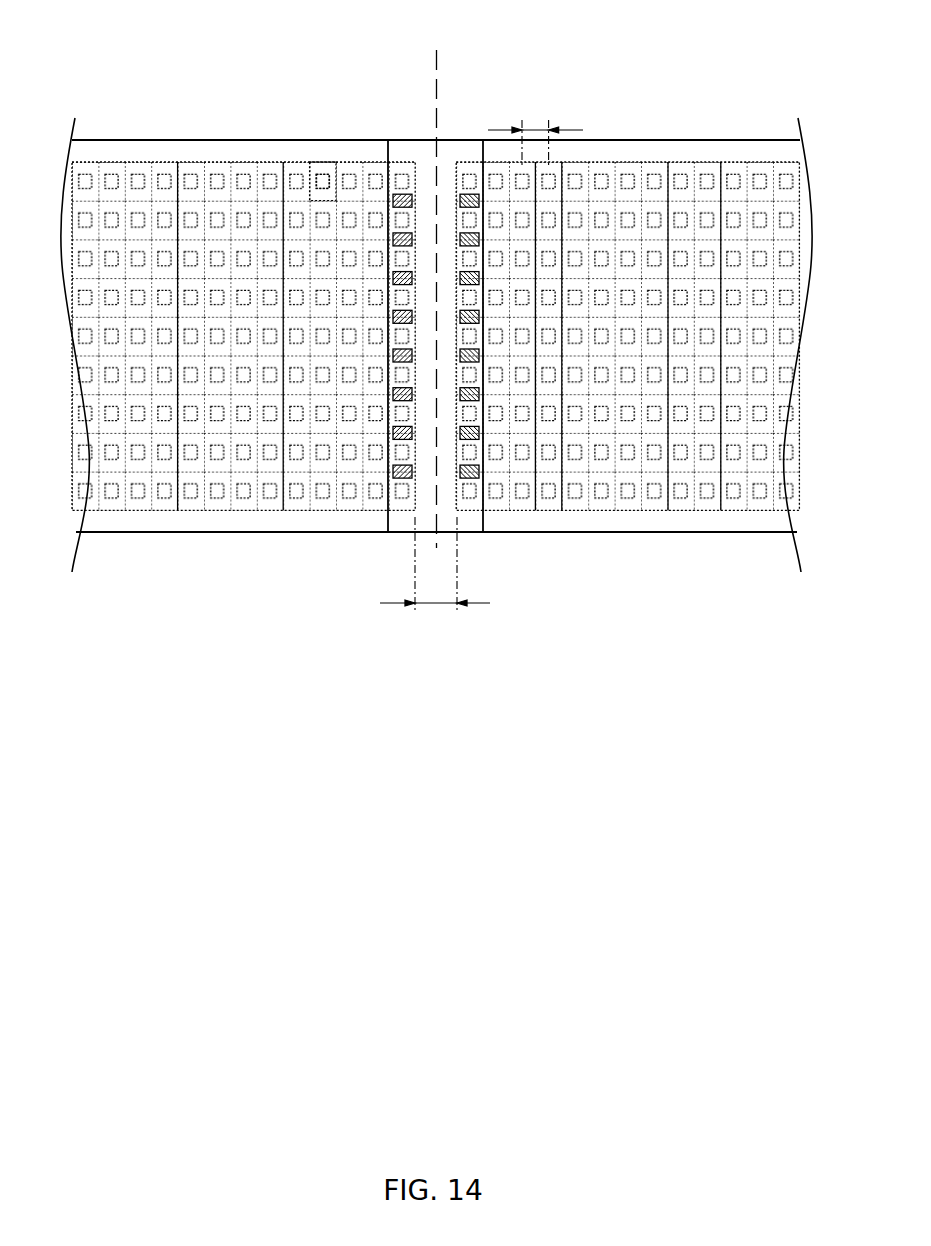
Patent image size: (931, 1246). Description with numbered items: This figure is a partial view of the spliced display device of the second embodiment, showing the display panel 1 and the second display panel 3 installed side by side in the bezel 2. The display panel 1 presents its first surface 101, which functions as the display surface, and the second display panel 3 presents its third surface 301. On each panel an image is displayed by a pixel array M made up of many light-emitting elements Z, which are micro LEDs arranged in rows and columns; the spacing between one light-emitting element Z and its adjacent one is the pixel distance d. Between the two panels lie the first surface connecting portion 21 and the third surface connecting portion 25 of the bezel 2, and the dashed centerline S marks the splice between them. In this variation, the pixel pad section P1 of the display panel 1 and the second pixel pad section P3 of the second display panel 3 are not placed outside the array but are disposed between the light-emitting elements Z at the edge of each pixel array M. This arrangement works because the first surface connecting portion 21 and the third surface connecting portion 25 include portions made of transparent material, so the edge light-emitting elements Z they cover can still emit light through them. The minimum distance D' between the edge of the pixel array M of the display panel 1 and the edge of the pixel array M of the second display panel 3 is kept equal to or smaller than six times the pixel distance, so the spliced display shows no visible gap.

The display panel 1 is at (264, 138).
The first surface 101 is at (177, 150).
The second display panel 3 is at (605, 140).
The third surface 301 is at (695, 147).
The bezel 2 is at (448, 138).
The first surface connecting portion 21 is at (409, 520).
The third surface connecting portion 25 is at (462, 520).
The splicing centerline S is at (436, 299).
The pixel array M is at (322, 160).
The light-emitting elements Z is at (323, 177).
The pixel pad section P1 is at (410, 193).
The second pixel pad section P3 is at (460, 193).
The pixel distance d is at (535, 133).
The minimum distance D' is at (435, 579).